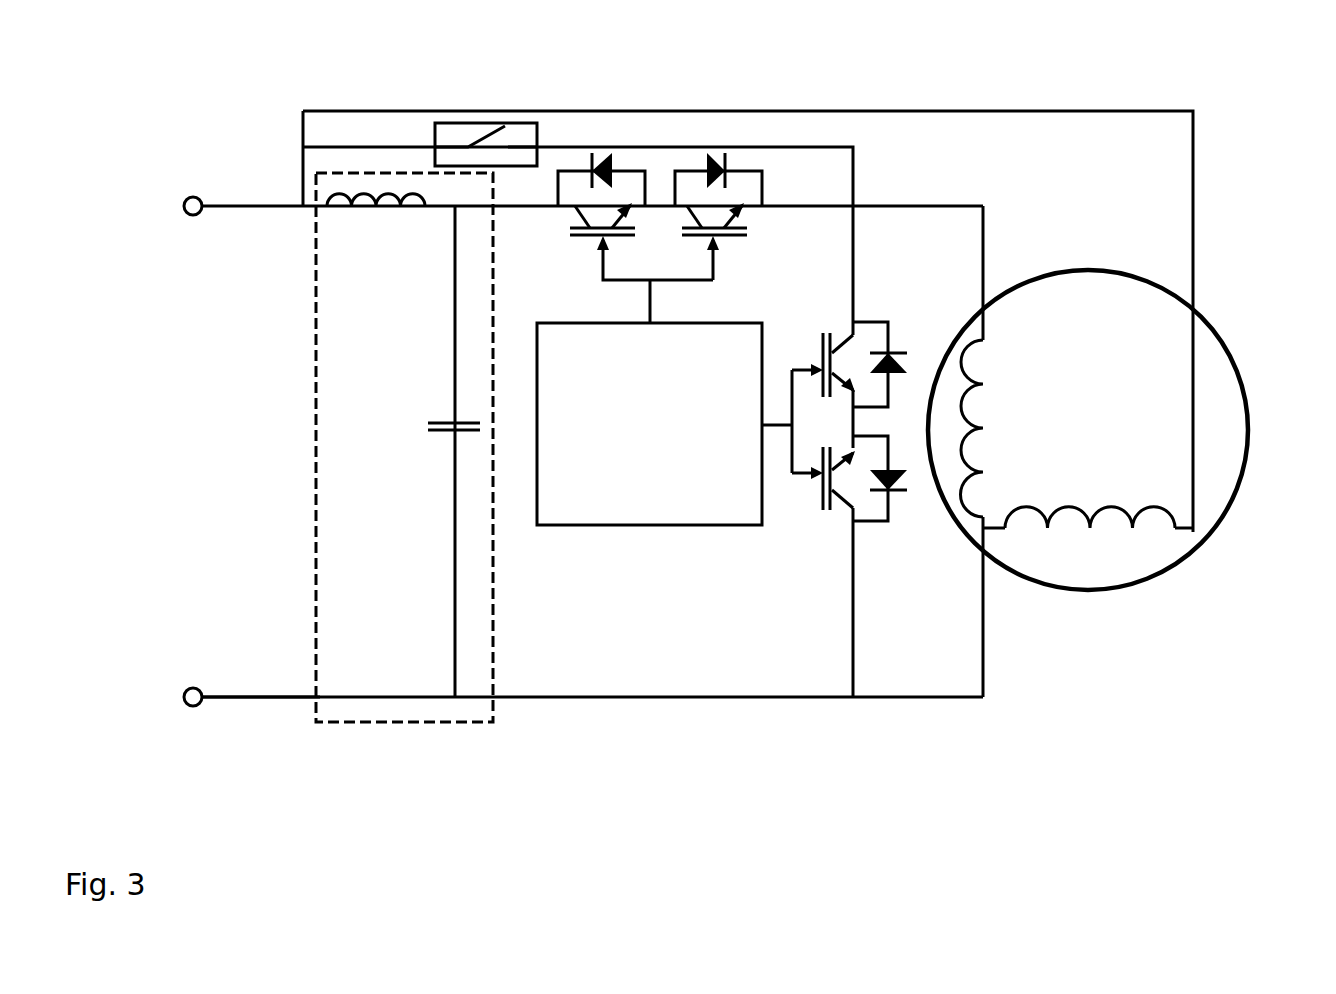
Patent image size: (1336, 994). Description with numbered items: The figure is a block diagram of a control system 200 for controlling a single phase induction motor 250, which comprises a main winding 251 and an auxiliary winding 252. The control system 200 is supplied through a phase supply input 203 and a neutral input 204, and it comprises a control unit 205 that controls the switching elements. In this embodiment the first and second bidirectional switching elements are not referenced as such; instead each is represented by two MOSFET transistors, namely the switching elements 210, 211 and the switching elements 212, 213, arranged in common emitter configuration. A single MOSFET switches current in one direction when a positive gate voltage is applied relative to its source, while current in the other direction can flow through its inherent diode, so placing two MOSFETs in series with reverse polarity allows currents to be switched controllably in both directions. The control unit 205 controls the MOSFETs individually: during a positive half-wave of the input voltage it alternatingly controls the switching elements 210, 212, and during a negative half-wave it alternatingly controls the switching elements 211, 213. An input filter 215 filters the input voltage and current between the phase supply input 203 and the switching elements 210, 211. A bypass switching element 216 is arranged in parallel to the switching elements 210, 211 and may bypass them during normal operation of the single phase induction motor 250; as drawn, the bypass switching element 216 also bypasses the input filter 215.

The control system 200 is at (437, 784).
The phase supply input 203 is at (192, 197).
The neutral input 204 is at (193, 707).
The control unit 205 is at (678, 525).
The switching element 210 is at (596, 168).
The switching element 211 is at (700, 168).
The switching element 212 is at (828, 333).
The switching element 213 is at (827, 512).
The input filter 215 is at (345, 181).
The bypass switching element 216 is at (470, 123).
The single phase induction motor 250 is at (1080, 268).
The main winding 251 is at (985, 423).
The auxiliary winding 252 is at (1095, 532).